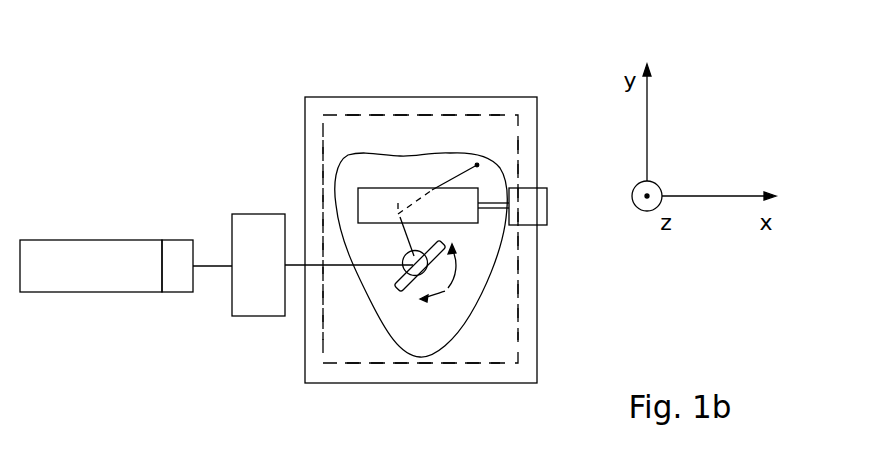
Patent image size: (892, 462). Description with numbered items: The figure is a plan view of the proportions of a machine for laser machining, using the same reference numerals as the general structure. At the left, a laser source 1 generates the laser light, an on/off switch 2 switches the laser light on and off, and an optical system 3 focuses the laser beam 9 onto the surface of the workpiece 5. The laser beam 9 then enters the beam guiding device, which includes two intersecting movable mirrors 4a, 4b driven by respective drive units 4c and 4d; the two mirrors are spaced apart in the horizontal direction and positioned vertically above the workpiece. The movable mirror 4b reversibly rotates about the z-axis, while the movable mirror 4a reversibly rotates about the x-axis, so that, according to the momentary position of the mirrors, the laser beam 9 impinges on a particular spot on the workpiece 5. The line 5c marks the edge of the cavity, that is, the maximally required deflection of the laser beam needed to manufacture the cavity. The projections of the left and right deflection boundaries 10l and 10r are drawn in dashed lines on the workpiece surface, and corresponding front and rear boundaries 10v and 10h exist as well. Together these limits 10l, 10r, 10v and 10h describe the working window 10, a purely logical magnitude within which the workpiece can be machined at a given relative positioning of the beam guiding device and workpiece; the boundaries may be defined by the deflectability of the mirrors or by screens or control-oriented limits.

The laser source 1 is at (65, 291).
The on/off switch for the laser light 2 is at (179, 291).
The optical system 3 is at (259, 316).
The movable mirror 4a is at (373, 195).
The movable mirror 4b is at (400, 292).
The drive unit 4c is at (547, 205).
The drive unit 4d is at (431, 272).
The workpiece 5 is at (507, 114).
The edge of the cavity 5c is at (500, 165).
The light beam 9 is at (218, 262).
The working window 10 is at (332, 126).
The rear deflection boundary 10h is at (402, 112).
The left deflection boundary 10l is at (322, 158).
The right deflection boundary 10r is at (443, 227).
The front deflection boundary 10v is at (399, 370).